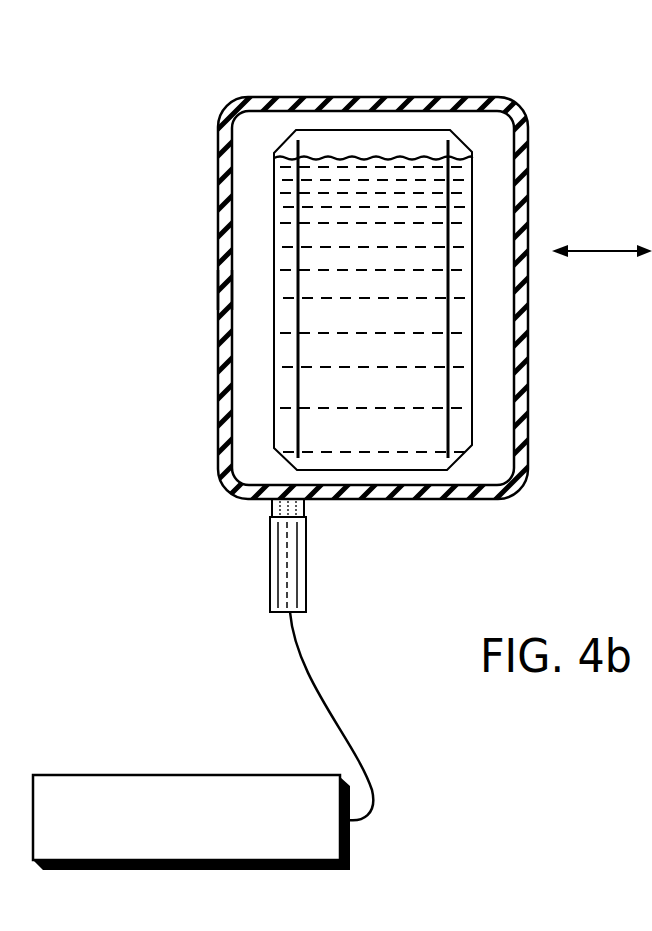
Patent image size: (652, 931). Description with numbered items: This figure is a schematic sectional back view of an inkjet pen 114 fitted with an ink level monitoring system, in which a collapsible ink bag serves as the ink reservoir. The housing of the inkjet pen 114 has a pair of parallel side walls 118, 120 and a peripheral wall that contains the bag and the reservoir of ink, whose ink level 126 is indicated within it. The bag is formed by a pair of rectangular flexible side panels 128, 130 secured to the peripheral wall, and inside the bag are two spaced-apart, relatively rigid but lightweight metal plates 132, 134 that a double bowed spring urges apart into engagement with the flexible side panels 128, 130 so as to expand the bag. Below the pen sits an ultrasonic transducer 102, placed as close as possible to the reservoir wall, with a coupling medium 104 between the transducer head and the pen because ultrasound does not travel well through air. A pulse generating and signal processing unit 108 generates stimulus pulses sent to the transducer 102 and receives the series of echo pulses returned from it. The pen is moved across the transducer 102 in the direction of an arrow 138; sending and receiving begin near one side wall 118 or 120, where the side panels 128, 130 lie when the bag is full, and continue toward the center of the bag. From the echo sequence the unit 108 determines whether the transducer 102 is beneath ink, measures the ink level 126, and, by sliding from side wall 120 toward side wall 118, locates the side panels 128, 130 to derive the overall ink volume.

The ultrasonic transducer 102 is at (283, 562).
The coupling medium 104 is at (272, 506).
The pulse generating and signal processing unit 108 is at (200, 775).
The inkjet pen 114 is at (326, 325).
The side wall 118 is at (520, 355).
The side wall 120 is at (226, 293).
The ink level 126 is at (408, 148).
The flexible side panel 128 is at (371, 265).
The flexible side panel 130 is at (274, 383).
The metal plate 132 is at (448, 310).
The metal plate 134 is at (298, 237).
The arrow 138 is at (600, 251).